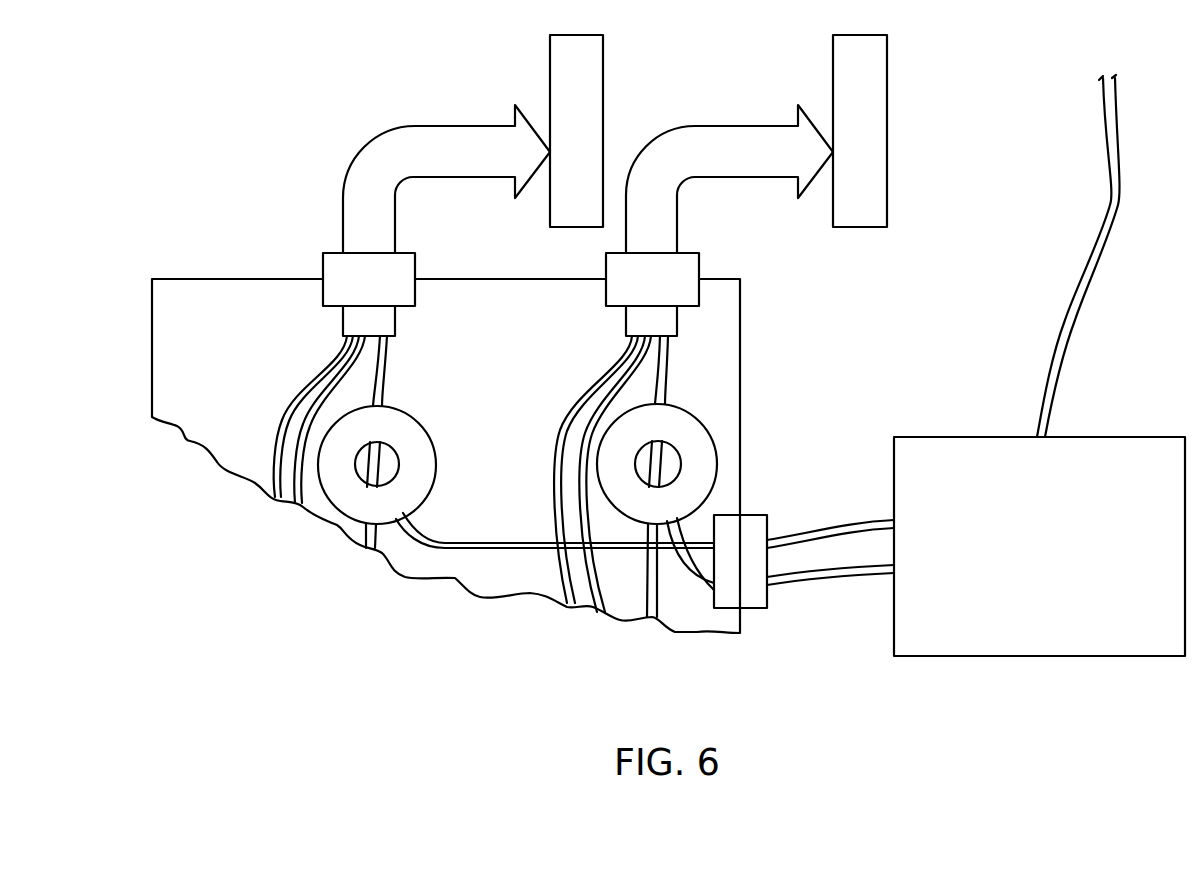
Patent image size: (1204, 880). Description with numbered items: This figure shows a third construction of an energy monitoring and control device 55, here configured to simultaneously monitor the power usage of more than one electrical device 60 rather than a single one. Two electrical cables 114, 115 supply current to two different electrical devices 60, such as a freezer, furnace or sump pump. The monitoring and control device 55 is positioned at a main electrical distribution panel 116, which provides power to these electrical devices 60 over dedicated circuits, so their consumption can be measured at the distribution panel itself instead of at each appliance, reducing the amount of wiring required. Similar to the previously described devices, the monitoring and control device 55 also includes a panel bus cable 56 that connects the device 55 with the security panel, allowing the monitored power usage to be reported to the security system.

The energy monitoring and control device 55 is at (1122, 657).
The panel bus cable 56 is at (1118, 207).
The electrical device 60 is at (603, 80).
The electrical cable 114 is at (452, 126).
The electrical cable 115 is at (747, 126).
The main electrical distribution panel 116 is at (760, 515).